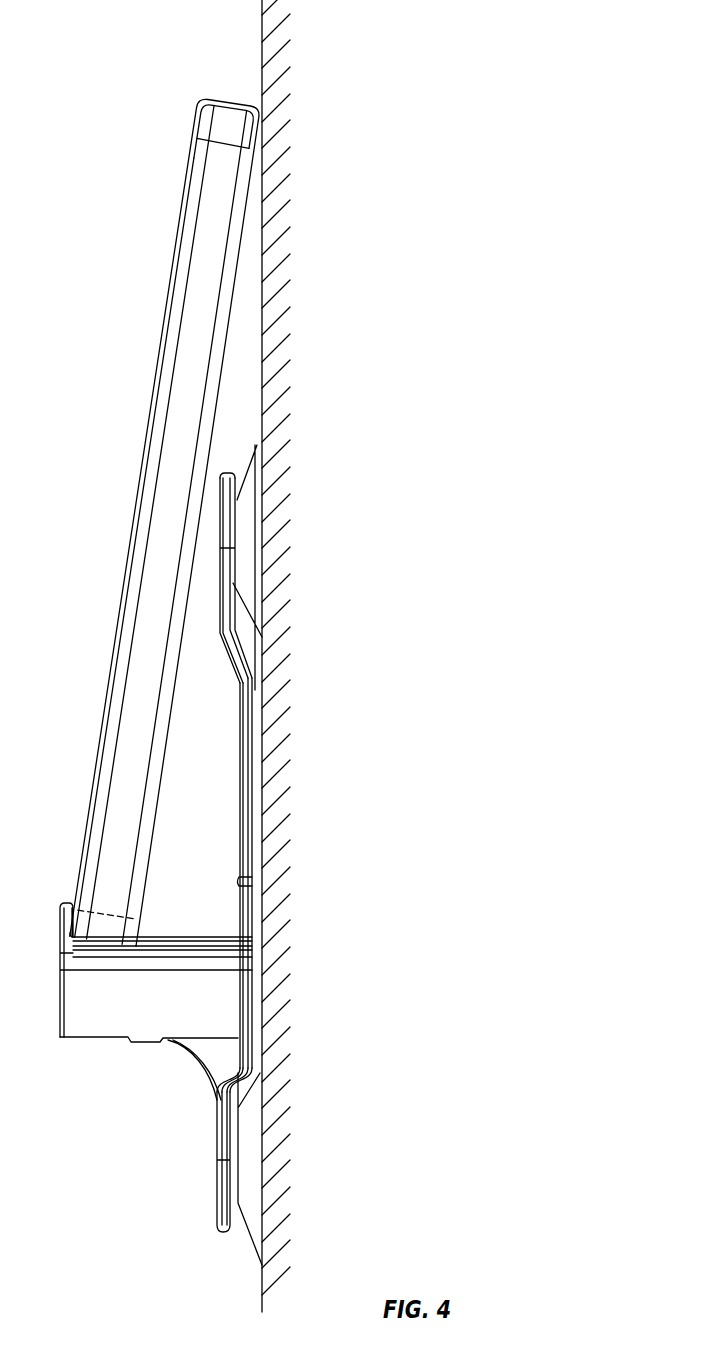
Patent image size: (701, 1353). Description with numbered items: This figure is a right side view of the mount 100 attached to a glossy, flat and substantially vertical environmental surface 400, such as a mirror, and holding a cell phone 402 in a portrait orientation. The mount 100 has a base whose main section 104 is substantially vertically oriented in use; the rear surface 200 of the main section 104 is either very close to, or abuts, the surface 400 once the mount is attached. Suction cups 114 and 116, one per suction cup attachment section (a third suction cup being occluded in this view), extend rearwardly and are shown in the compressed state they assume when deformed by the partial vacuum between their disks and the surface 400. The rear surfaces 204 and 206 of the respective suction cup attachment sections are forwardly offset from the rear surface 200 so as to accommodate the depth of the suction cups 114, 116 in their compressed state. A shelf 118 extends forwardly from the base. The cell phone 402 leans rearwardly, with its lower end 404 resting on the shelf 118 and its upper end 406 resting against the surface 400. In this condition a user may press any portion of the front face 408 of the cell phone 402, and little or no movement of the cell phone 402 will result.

The mount 100 is at (247, 740).
The main section 104 is at (252, 883).
The suction cup 114 is at (262, 480).
The suction cup 116 is at (250, 1158).
The shelf 118 is at (145, 1033).
The rear surface 200 is at (255, 838).
The rear surface 204 is at (233, 622).
The rear surface 206 is at (230, 1097).
The environmental surface 400 is at (266, 297).
The cell phone 402 is at (155, 390).
The lower end 404 is at (130, 952).
The upper end 406 is at (232, 107).
The front face 408 is at (118, 633).